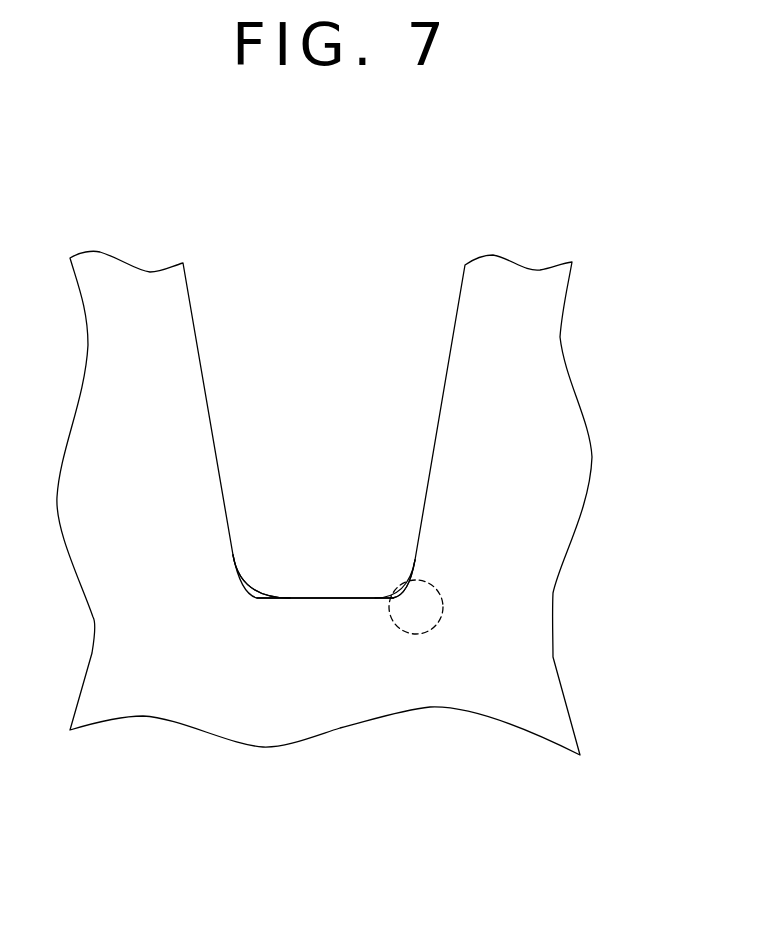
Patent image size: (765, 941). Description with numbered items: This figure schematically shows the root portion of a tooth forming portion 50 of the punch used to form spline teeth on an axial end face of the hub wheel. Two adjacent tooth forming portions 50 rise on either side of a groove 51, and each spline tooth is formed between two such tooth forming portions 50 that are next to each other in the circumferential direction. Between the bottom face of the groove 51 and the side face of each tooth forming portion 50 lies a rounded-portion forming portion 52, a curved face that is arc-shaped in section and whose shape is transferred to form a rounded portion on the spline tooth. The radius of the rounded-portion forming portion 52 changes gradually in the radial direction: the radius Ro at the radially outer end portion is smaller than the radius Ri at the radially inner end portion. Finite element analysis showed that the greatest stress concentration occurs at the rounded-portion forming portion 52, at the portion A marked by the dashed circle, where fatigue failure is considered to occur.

The tooth forming portion 50 is at (152, 302).
The groove 51 is at (328, 596).
The rounded-portion forming portion 52 is at (253, 537).
The radius at radially inner end portion Ri is at (255, 580).
The radius at radially outer end portion Ro is at (405, 592).
The portion of greatest stress concentration A is at (408, 633).